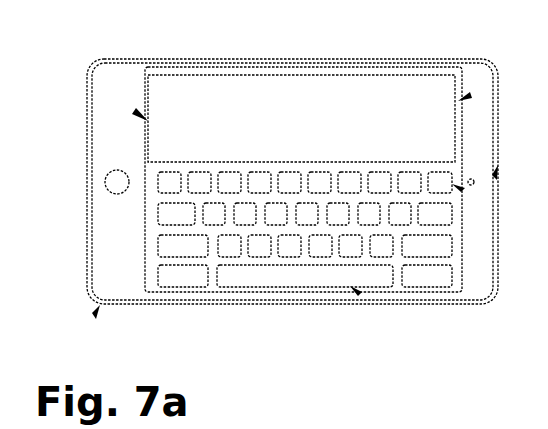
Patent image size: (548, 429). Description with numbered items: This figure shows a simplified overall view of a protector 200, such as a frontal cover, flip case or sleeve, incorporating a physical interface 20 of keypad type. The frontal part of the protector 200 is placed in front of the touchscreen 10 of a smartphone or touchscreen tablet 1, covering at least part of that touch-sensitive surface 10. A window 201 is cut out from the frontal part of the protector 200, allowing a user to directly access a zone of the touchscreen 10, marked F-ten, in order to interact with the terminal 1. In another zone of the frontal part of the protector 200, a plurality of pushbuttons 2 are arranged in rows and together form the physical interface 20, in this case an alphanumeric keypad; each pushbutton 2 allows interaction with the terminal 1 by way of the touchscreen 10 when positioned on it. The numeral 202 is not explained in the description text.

The terminal 1 is at (100, 305).
The pushbutton 2 is at (452, 184).
The touch-sensitive surface 10 is at (148, 121).
The physical interface 20 is at (458, 315).
The protector 200 is at (256, 181).
The window 201 is at (458, 101).
The housing edge 202 is at (497, 166).